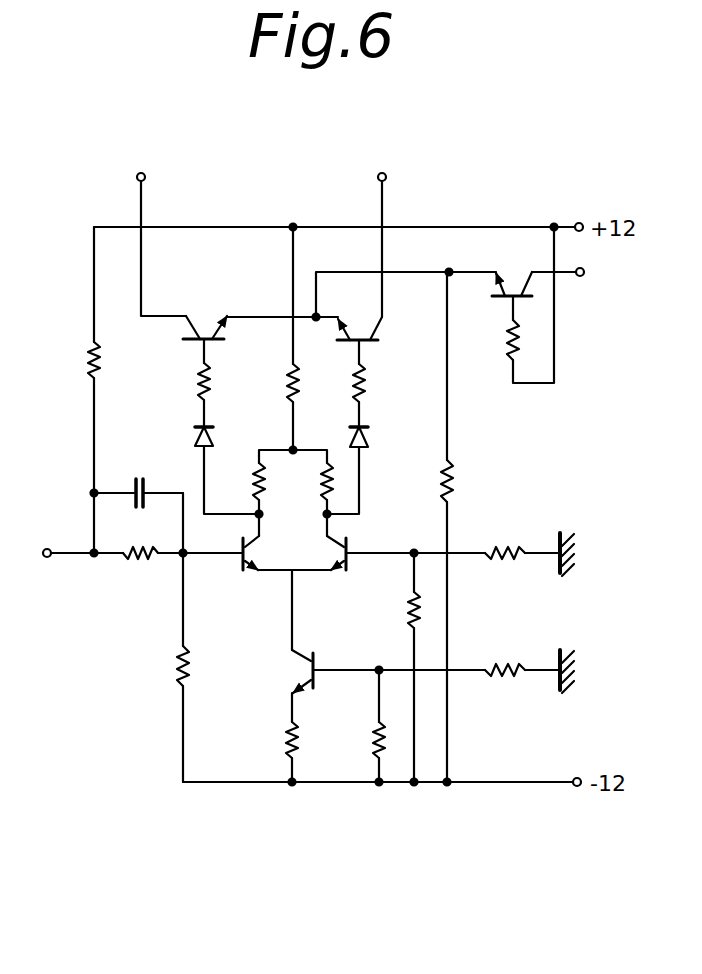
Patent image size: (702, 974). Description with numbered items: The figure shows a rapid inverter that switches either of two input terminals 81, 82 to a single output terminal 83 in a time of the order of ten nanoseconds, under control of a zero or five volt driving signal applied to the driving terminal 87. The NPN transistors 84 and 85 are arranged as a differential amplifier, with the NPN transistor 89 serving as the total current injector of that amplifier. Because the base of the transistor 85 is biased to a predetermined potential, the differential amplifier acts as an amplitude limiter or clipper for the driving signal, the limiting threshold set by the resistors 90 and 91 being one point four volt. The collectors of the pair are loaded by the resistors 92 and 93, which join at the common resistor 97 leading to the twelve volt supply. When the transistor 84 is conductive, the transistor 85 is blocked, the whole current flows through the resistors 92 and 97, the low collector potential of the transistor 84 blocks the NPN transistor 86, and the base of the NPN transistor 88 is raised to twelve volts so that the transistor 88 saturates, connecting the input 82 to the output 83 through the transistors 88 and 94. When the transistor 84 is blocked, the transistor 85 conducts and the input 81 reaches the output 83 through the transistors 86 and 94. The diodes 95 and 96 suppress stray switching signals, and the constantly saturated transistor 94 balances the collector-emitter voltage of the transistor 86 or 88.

The input terminal 81 is at (154, 172).
The input terminal 82 is at (395, 172).
The output terminal 83 is at (577, 280).
The NPN transistor 84 is at (248, 553).
The NPN transistor 85 is at (346, 553).
The NPN transistor 86 is at (208, 334).
The driving terminal 87 is at (45, 558).
The NPN transistor 88 is at (362, 334).
The NPN transistor 89 is at (311, 672).
The resistor 90 is at (410, 624).
The resistor 91 is at (522, 569).
The resistor 92 is at (276, 490).
The resistor 93 is at (343, 490).
The constantly saturated transistor 94 is at (515, 290).
The diode 95 is at (213, 432).
The diode 96 is at (368, 432).
The resistor 97 is at (300, 378).